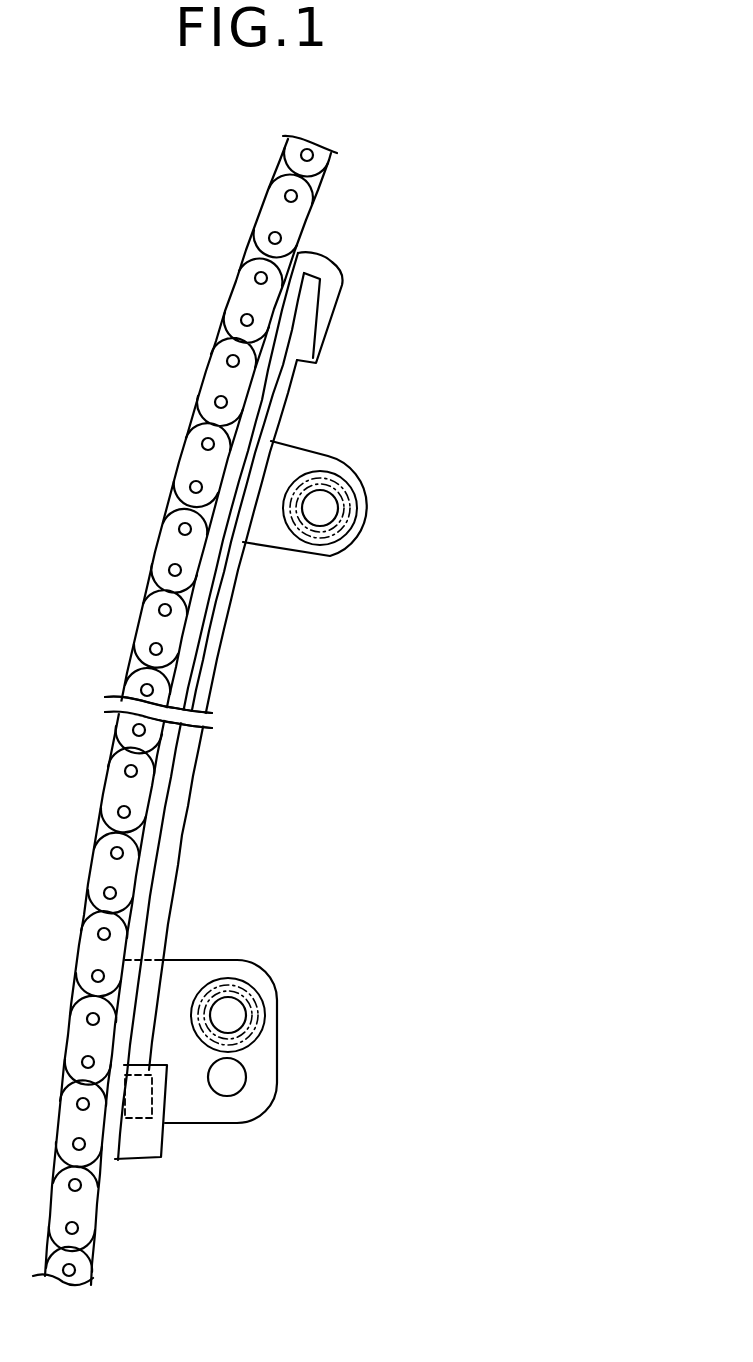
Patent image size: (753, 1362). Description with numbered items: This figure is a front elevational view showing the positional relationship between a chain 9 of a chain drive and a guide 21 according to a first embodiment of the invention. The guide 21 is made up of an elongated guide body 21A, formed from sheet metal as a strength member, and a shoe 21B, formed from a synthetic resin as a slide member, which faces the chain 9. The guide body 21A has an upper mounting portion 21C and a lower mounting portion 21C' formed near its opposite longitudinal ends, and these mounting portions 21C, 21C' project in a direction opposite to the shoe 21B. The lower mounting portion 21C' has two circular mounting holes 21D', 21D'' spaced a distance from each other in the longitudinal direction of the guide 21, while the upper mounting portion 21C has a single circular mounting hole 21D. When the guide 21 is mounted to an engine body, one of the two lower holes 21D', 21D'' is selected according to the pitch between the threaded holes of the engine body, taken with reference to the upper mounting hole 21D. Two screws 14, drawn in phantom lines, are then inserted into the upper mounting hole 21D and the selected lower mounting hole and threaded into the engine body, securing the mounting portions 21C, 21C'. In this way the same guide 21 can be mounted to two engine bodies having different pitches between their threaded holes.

The chain 9 is at (130, 581).
The screws 14 is at (343, 496).
The guide 21 is at (233, 673).
The guide body 21A is at (188, 797).
The shoe 21B is at (157, 850).
The upper mounting portion 21C is at (331, 463).
The lower mounting portion 21C' is at (207, 1089).
The circular mounting hole 21D is at (395, 509).
The circular mounting hole 21D' is at (307, 1015).
The circular mounting hole 21D'' is at (313, 1077).